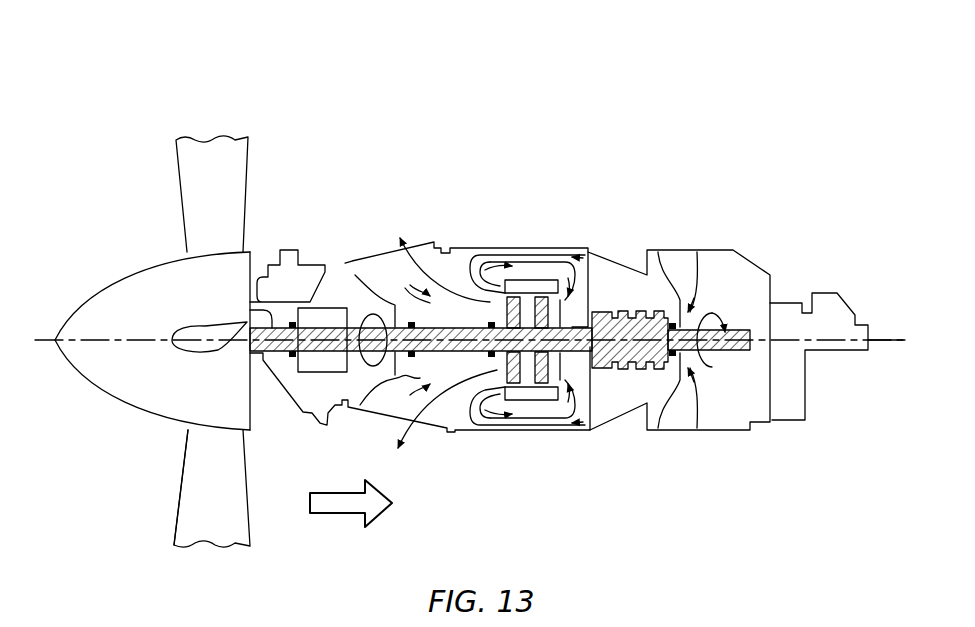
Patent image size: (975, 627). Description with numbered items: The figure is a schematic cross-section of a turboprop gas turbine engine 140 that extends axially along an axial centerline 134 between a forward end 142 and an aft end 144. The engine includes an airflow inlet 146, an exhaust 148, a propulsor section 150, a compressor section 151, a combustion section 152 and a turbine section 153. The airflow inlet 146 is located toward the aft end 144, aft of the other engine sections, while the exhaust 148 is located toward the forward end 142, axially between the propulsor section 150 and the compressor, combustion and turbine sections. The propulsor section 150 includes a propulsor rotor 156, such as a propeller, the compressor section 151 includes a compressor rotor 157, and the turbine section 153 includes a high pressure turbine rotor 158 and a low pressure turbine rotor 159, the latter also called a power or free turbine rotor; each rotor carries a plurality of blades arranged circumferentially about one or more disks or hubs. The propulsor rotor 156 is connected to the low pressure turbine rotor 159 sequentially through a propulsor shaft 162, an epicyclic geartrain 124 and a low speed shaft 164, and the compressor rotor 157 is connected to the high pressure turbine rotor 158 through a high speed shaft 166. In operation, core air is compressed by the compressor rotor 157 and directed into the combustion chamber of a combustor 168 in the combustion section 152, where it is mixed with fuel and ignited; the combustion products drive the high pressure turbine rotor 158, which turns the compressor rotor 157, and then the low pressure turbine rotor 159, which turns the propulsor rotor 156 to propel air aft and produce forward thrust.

The epicyclic geartrain 124 is at (328, 298).
The axial centerline 134 is at (898, 342).
The turboprop gas turbine engine 140 is at (532, 142).
The forward end 142 is at (55, 345).
The aft end 144 is at (868, 330).
The airflow inlet 146 is at (680, 262).
The exhaust 148 is at (422, 246).
The propulsor section 150 is at (212, 103).
The compressor section 151 is at (633, 392).
The combustion section 152 is at (492, 252).
The turbine section 153 is at (528, 277).
The propulsor rotor 156 is at (182, 428).
The compressor rotor 157 is at (622, 310).
The high pressure turbine (HPT) rotor 158 is at (565, 375).
The low pressure turbine (LPT) rotor 159 is at (495, 377).
The propulsor shaft 162 is at (248, 308).
The low speed shaft 164 is at (394, 305).
The high speed shaft 166 is at (587, 387).
The combustor 168 is at (568, 252).